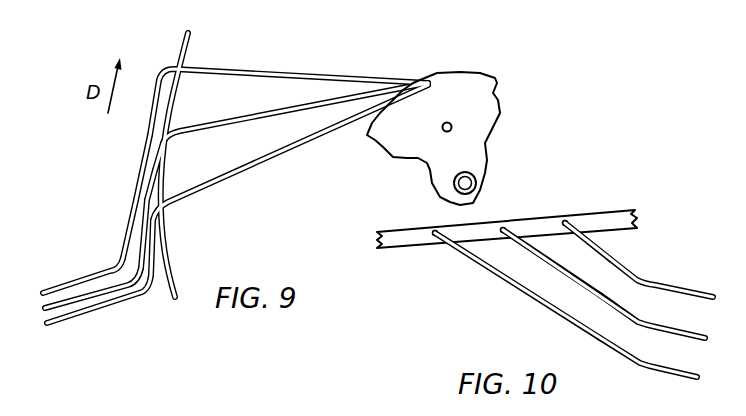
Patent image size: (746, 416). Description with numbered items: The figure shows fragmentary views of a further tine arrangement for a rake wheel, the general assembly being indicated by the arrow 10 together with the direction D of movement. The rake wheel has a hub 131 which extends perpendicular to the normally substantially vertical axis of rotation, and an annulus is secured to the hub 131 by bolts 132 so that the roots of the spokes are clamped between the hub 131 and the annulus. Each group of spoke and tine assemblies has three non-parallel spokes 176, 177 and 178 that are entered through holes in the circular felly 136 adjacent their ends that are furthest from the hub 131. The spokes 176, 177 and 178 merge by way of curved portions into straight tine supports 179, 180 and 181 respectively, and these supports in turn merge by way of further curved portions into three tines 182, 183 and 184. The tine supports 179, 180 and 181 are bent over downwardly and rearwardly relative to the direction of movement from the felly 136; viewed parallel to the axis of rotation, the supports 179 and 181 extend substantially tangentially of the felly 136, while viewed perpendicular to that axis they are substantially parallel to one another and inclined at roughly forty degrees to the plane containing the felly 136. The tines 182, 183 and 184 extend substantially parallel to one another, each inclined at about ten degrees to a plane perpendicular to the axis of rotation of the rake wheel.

In FIG. 9, the direction of movement arrow 10 is at (78, 192).
In FIG. 9, the hub 131 is at (487, 103).
In FIG. 9, the bolt 132 is at (441, 126).
In FIG. 9, the felly 136 is at (186, 41).
In FIG. 10, the felly 136 is at (608, 220).
In FIG. 9, the spoke 176 is at (273, 72).
In FIG. 9, the spoke 177 is at (258, 127).
In FIG. 9, the spoke 178 is at (245, 167).
In FIG. 9, the tine support 179 is at (155, 116).
In FIG. 10, the tine support 179 is at (487, 268).
In FIG. 9, the tine support 180 is at (144, 173).
In FIG. 10, the tine support 180 is at (563, 272).
In FIG. 9, the tine support 181 is at (148, 250).
In FIG. 10, the tine support 181 is at (622, 268).
In FIG. 9, the tine 182 is at (57, 290).
In FIG. 10, the tine 182 is at (690, 370).
In FIG. 9, the tine 183 is at (100, 302).
In FIG. 10, the tine 183 is at (688, 313).
In FIG. 9, the tine 184 is at (143, 295).
In FIG. 10, the tine 184 is at (688, 288).